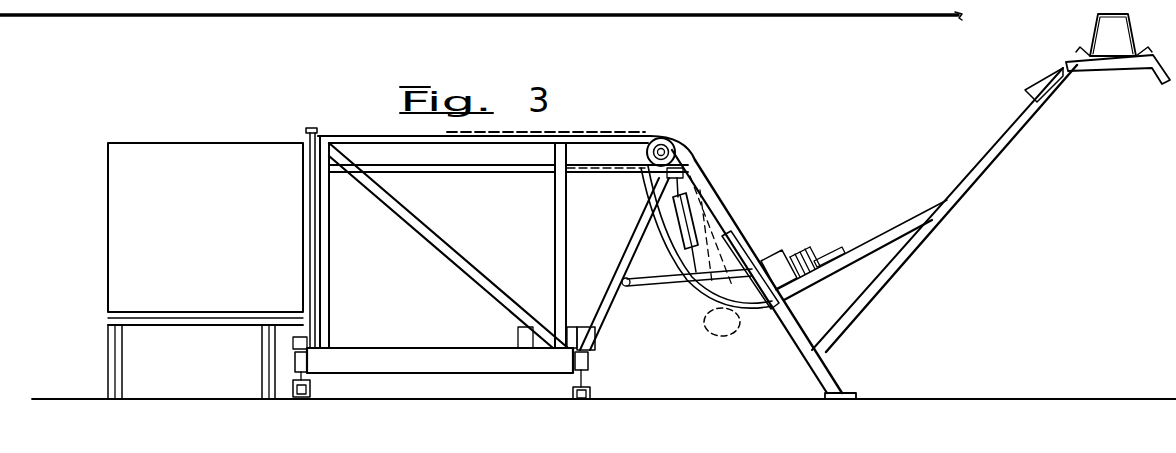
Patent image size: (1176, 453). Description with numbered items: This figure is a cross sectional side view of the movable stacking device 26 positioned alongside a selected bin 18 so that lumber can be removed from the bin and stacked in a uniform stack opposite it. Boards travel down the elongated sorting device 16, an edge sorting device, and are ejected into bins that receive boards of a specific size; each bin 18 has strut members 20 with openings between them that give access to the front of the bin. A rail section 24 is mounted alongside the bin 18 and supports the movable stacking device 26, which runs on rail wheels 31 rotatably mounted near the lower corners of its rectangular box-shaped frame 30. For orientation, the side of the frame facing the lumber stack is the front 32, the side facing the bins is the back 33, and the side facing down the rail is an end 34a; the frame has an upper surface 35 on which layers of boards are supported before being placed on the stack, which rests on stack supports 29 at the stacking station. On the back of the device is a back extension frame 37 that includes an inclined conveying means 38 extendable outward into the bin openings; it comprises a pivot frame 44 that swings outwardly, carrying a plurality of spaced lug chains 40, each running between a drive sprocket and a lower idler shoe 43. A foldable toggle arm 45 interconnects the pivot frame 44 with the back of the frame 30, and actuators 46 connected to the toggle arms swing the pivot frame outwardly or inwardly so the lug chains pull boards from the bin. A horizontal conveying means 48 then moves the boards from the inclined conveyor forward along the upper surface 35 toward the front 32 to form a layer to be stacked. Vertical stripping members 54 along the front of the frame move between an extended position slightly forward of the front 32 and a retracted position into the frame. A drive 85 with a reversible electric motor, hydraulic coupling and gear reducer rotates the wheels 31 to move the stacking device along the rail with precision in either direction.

The elongated sorting device 16 is at (1102, 76).
The bin 18 is at (859, 217).
The strut members 20 is at (790, 330).
The rail section 24 is at (715, 6).
The movable stacking device 26 is at (697, 156).
The stack supports 29 is at (123, 369).
The frame 30 is at (570, 246).
The rail wheels 31 is at (307, 379).
The front 32 is at (330, 268).
The back 33 is at (556, 278).
The end 34a is at (432, 244).
The upper surface 35 is at (391, 136).
The back extension frame 37 is at (627, 251).
The inclined conveying means 38 is at (737, 228).
The lug chains 40 is at (705, 290).
The lower idler shoe 43 is at (762, 306).
The pivot frame 44 is at (705, 196).
The foldable toggle arm 45 is at (654, 276).
The actuators 46 is at (680, 211).
The horizontal conveying means 48 is at (581, 136).
The vertical stripping members 54 is at (315, 229).
The drive 85 is at (598, 338).